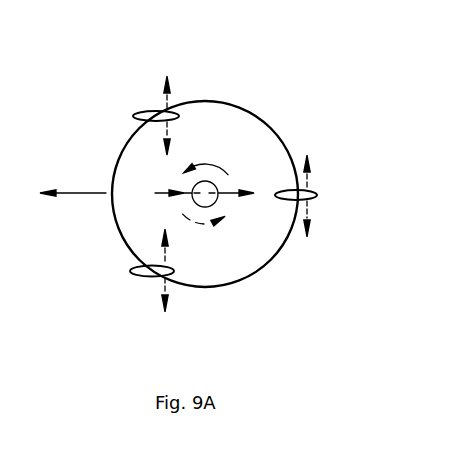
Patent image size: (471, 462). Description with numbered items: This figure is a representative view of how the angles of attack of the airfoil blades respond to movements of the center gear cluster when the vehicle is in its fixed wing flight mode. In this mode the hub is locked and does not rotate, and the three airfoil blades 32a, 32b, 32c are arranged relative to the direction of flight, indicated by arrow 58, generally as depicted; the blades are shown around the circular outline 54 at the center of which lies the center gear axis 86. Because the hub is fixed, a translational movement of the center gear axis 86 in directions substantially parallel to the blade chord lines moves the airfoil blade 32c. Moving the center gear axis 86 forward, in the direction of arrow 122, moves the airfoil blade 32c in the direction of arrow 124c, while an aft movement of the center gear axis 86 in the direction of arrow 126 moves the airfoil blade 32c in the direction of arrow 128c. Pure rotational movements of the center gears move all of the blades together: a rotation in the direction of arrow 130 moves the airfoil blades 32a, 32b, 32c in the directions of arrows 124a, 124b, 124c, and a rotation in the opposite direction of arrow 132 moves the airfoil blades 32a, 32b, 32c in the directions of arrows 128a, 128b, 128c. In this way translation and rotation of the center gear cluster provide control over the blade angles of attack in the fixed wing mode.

The housing / rotor body 54 is at (220, 103).
The direction of flight arrow 58 is at (96, 186).
The center gear axis 86 is at (203, 207).
The forward direction arrow 122 is at (182, 196).
The aft direction arrow 126 is at (224, 212).
The rotation direction arrow 130 is at (216, 162).
The rotation direction arrow 132 is at (215, 212).
The airfoil blade 32a is at (140, 112).
The airfoil blade 32b is at (131, 269).
The airfoil blade 32c is at (283, 190).
The blade movement arrow 124a is at (173, 98).
The blade movement arrow 124b is at (181, 267).
The blade movement arrow 124c is at (315, 190).
The blade movement arrow 128a is at (163, 135).
The blade movement arrow 128b is at (166, 291).
The blade movement arrow 128c is at (313, 205).